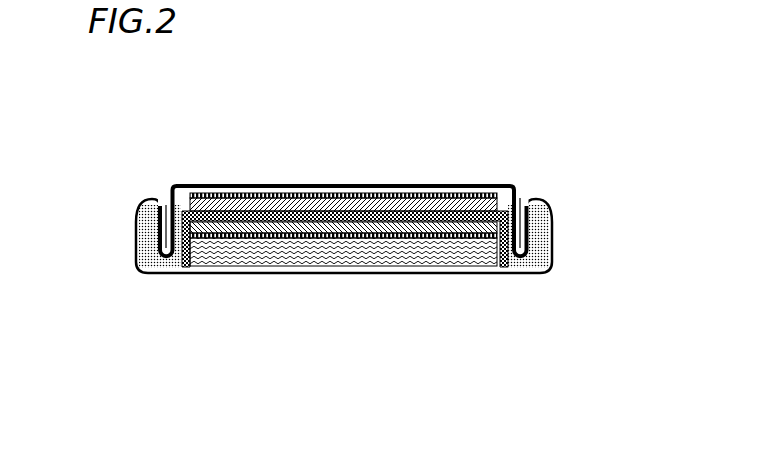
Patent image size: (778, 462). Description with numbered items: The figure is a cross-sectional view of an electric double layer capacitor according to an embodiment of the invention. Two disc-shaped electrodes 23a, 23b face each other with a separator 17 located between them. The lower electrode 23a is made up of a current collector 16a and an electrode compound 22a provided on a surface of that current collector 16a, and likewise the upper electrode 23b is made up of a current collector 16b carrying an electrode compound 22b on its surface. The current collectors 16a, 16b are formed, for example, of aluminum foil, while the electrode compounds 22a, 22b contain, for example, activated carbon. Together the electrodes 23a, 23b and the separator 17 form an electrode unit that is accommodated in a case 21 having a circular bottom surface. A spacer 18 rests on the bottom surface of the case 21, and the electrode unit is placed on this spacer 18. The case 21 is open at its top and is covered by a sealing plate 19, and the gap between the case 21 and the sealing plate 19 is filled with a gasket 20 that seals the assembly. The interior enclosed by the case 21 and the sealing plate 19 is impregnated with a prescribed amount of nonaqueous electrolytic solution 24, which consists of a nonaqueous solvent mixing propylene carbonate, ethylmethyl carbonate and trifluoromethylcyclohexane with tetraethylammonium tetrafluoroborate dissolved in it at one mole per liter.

The current collector 16a is at (353, 236).
The current collector 16b is at (420, 194).
The separator 17 is at (249, 213).
The spacer 18 is at (190, 363).
The sealing plate 19 is at (520, 192).
The gasket 20 is at (551, 254).
The case 21 is at (139, 243).
The electrode compound 22a is at (258, 236).
The electrode compound 22b is at (331, 200).
The electrode 23a is at (342, 323).
The electrode 23b is at (343, 114).
The nonaqueous electrolytic solution 24 is at (184, 206).